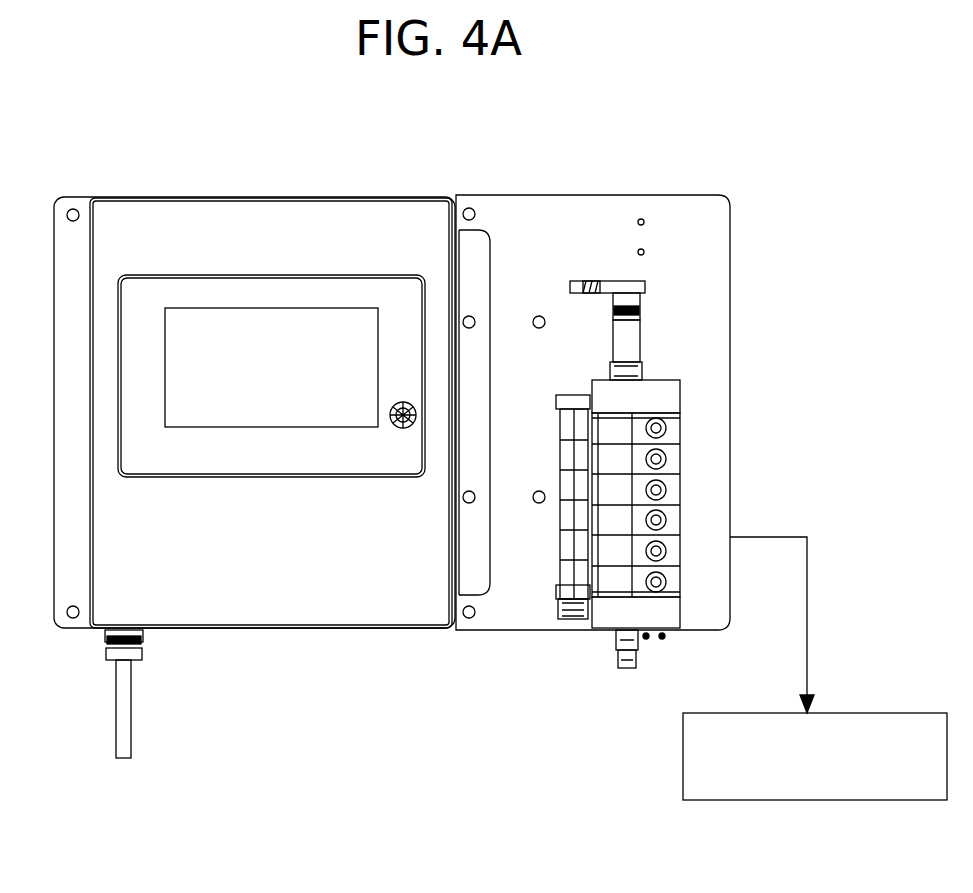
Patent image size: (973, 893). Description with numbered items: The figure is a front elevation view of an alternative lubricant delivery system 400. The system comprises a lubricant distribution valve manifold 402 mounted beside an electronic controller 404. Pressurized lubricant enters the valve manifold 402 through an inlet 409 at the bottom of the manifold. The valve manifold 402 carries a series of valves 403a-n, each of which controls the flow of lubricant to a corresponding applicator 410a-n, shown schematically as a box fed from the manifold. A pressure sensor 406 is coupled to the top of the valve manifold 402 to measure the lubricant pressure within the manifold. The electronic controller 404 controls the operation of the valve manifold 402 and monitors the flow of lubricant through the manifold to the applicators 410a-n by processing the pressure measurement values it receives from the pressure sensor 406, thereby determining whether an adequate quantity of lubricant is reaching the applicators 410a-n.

The lubricant delivery system 400 is at (758, 115).
The electronic controller 404 is at (207, 193).
The pressure sensor 406 is at (642, 346).
The lubricant distribution valve manifold 402 is at (683, 399).
The valves 403a-n is at (674, 515).
The inlet 409 is at (618, 666).
The applicators 410a-n is at (860, 713).